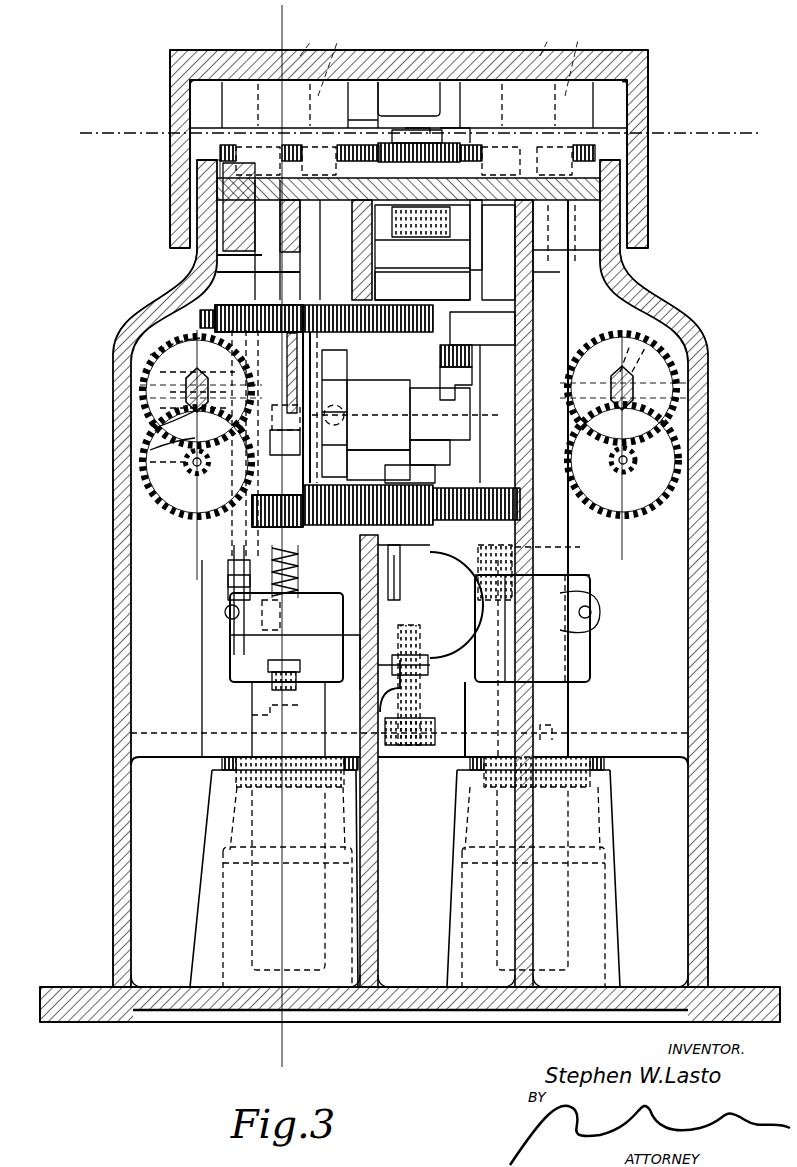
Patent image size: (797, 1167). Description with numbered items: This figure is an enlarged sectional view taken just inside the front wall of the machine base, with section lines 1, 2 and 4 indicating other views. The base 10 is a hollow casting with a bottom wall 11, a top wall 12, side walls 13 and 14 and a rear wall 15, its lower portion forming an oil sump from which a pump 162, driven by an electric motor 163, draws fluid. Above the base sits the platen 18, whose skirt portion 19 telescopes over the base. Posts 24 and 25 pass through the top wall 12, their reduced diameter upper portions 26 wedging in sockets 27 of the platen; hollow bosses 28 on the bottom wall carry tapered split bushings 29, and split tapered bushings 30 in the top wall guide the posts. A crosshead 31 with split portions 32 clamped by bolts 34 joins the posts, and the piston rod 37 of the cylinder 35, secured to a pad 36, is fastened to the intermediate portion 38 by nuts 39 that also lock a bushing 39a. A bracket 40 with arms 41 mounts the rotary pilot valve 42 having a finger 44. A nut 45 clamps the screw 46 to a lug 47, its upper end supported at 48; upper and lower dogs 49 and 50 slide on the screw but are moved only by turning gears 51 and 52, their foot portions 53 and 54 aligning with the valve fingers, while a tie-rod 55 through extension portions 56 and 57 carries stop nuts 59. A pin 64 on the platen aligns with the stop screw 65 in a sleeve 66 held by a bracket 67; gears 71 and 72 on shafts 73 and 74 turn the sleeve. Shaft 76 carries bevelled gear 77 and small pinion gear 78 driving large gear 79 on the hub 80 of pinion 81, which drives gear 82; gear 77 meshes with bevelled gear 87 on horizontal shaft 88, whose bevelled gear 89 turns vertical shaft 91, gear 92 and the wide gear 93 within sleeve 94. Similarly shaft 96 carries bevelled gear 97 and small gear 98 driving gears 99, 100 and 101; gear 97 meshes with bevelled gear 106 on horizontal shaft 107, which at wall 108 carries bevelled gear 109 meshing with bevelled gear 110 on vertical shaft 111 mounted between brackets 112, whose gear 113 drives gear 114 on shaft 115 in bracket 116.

The section line 1- 1 is at (276, 18).
The section line 2- 2 is at (274, 33).
The section line 4- 4 is at (91, 125).
The base 10 is at (722, 644).
The bottom wall 11 is at (420, 1012).
The top wall 12 is at (592, 190).
The side wall 13 is at (112, 693).
The side wall 14 is at (709, 692).
The rear wall 15 is at (409, 708).
The platen 18 is at (661, 61).
The skirt portion 19 is at (168, 184).
The post 24 is at (254, 710).
The post 25 is at (566, 714).
The reduced diameter upper portion 26 is at (429, 32).
The socket 27 is at (454, 52).
The hollow boss 28 is at (202, 898).
The tapered split bushing 29 is at (236, 816).
The split tapered bushing 30 is at (605, 212).
The crosshead 31 is at (608, 589).
The split portion 32 is at (238, 668).
The bolt 34 is at (226, 612).
The cylinder 35 is at (534, 278).
The pad 36 is at (456, 232).
The piston rod 37 is at (420, 598).
The intermediate portion 38 is at (456, 692).
The nut 39 is at (420, 634).
The bushing 39a is at (428, 668).
The bracket 40 is at (432, 424).
The arm 41 is at (368, 458).
The rotary pilot valve 42 is at (416, 401).
The finger 44 is at (285, 456).
The nut 45 is at (266, 668).
The screw 46 is at (232, 592).
The lug 47 is at (318, 660).
The upper support 48 is at (250, 222).
The upper dog 49 is at (248, 420).
The lower dog 50 is at (302, 564).
The gear 51 is at (218, 345).
The gear 52 is at (258, 512).
The foot portion 53 is at (344, 413).
The foot portion 54 is at (362, 438).
The tie-rod 55 is at (200, 478).
The extension portion 56 is at (150, 360).
The extension portion 57 is at (270, 528).
The nut 59 is at (228, 578).
The pin 64 is at (400, 142).
The stop screw 65 is at (428, 130).
The sleeve 66 is at (476, 256).
The bracket 67 is at (452, 128).
The gear 71 is at (462, 140).
The gear 72 is at (345, 127).
The shaft 73 is at (408, 118).
The shaft 74 is at (368, 142).
The shaft 76 is at (190, 412).
The bevelled gear 77 is at (186, 456).
The small pinion gear 78 is at (158, 373).
The large diameter gear 79 is at (150, 502).
The hub 80 is at (290, 415).
The small pinion gear 81 is at (192, 462).
The large diameter gear 82 is at (162, 357).
The bevelled gear 87 is at (168, 392).
The horizontal shaft 88 is at (158, 408).
The bevelled gear 89 is at (150, 456).
The vertical shaft 91 is at (260, 256).
The gear 92 is at (220, 300).
The gear 93 is at (432, 316).
The sleeve 94 is at (398, 280).
The shaft 96 is at (620, 410).
The bevelled gear 97 is at (634, 380).
The small gear 98 is at (624, 380).
The large diameter gear 99 is at (672, 462).
The small diameter gear 100 is at (636, 462).
The large diameter gear 101 is at (680, 482).
The bevelled gear 106 is at (640, 318).
The horizontal shaft 107 is at (706, 390).
The wall 108 is at (534, 278).
The bevelled gear 109 is at (482, 378).
The bevelled gear 110 is at (476, 364).
The vertical shaft 111 is at (476, 460).
The bracket 112 is at (500, 330).
The gear 113 is at (430, 456).
The gear 114 is at (398, 478).
The shaft 115 is at (398, 590).
The bracket 116 is at (398, 573).
The pump 162 is at (482, 566).
The electric motor 163 is at (505, 547).